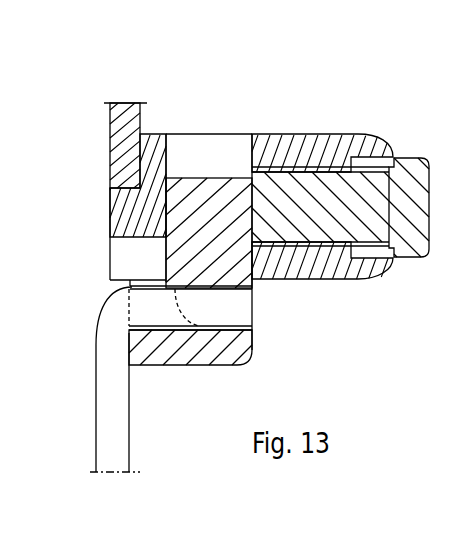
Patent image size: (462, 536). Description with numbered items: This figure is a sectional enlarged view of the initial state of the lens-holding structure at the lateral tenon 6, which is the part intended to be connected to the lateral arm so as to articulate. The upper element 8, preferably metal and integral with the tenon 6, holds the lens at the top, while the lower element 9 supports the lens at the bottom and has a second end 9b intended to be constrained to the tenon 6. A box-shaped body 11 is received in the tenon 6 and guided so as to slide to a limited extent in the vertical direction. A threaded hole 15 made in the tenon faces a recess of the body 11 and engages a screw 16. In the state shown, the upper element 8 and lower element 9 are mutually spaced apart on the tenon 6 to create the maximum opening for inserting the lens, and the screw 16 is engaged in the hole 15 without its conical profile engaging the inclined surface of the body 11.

The upper element 8 is at (108, 154).
The box-shaped body 11 is at (209, 176).
The lateral tenon 6 is at (303, 172).
The threaded hole 15 is at (320, 182).
The screw 16 is at (350, 218).
The second end 9b is at (237, 309).
The lower element 9 is at (94, 420).